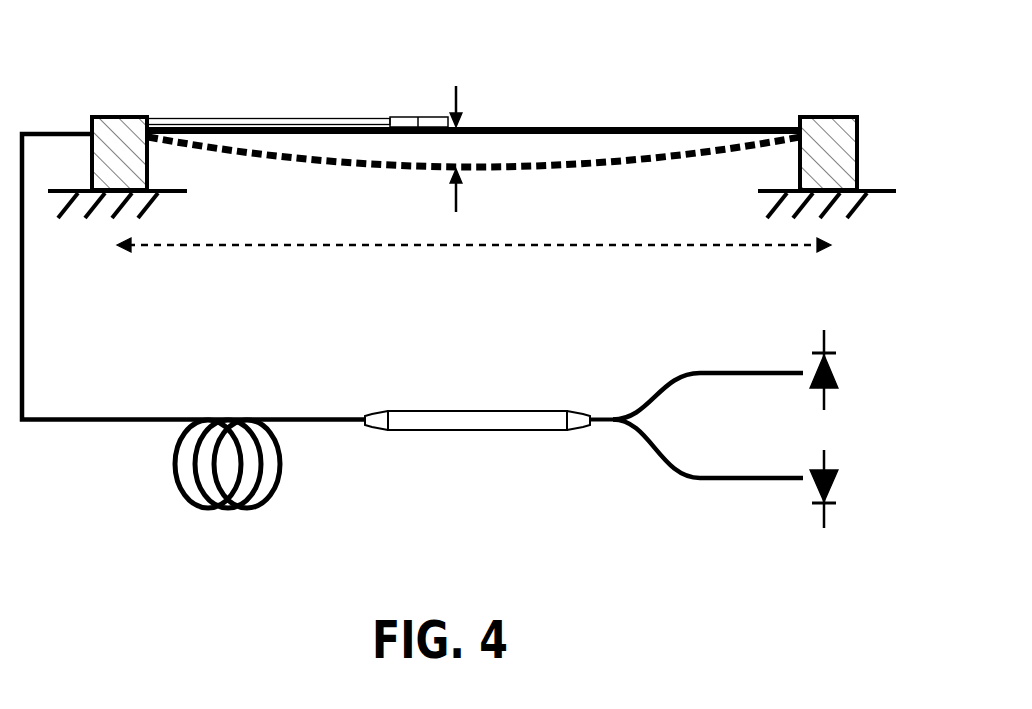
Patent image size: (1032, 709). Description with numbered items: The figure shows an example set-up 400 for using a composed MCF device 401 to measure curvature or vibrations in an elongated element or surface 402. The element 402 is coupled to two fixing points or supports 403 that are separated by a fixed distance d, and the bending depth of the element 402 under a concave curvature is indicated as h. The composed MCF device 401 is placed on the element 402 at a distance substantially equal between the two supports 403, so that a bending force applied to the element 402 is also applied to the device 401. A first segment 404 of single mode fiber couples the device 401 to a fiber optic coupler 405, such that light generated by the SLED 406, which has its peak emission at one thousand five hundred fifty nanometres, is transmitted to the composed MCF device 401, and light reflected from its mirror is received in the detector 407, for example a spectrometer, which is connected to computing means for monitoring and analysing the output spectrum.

The set-up 400 is at (710, 100).
The composed MCF device 401 is at (413, 95).
The elongated element or surface 402 is at (595, 127).
The fixing points or supports 403 is at (120, 130).
The first segment (SMF1) of the single mode fiber 404 is at (274, 119).
The fiber optic coupler (FOC) 405 is at (423, 422).
The SLED 406 is at (835, 375).
The detector 407 is at (835, 487).